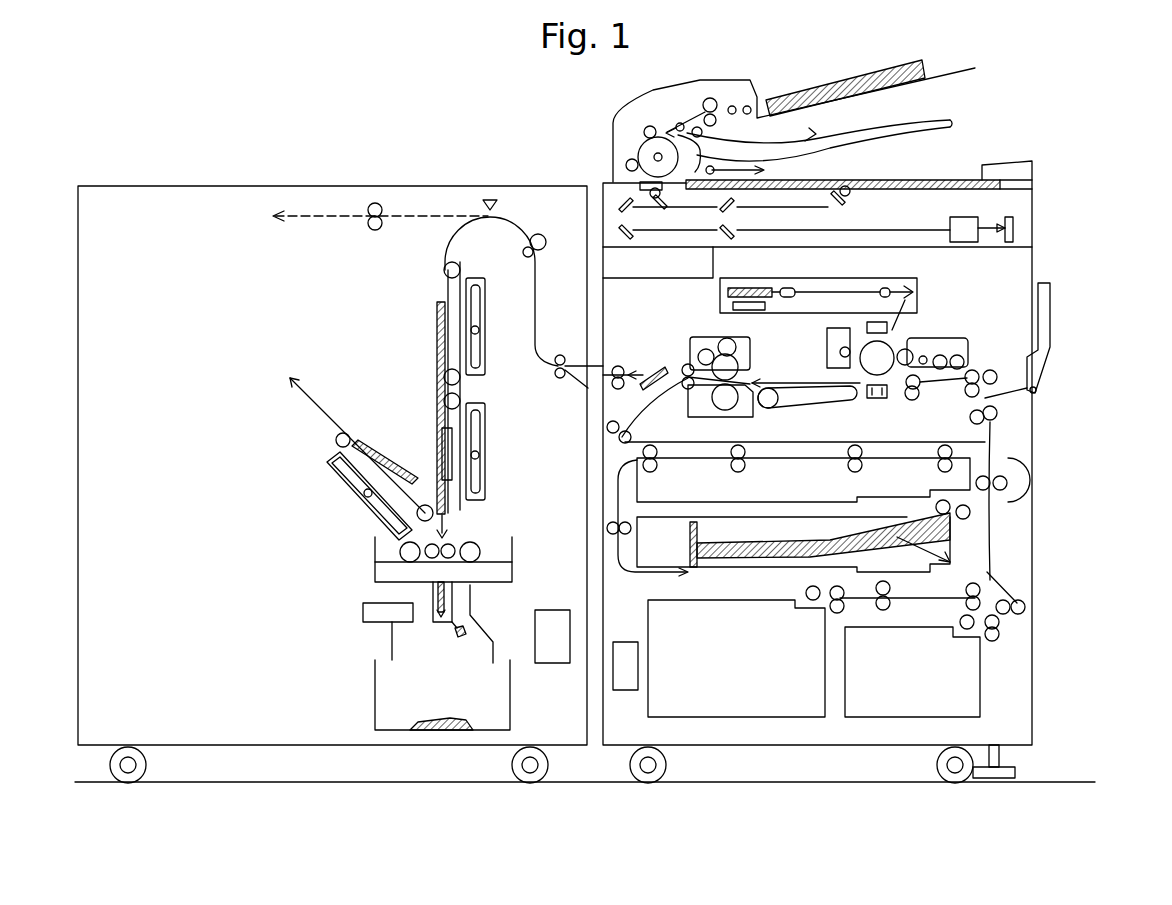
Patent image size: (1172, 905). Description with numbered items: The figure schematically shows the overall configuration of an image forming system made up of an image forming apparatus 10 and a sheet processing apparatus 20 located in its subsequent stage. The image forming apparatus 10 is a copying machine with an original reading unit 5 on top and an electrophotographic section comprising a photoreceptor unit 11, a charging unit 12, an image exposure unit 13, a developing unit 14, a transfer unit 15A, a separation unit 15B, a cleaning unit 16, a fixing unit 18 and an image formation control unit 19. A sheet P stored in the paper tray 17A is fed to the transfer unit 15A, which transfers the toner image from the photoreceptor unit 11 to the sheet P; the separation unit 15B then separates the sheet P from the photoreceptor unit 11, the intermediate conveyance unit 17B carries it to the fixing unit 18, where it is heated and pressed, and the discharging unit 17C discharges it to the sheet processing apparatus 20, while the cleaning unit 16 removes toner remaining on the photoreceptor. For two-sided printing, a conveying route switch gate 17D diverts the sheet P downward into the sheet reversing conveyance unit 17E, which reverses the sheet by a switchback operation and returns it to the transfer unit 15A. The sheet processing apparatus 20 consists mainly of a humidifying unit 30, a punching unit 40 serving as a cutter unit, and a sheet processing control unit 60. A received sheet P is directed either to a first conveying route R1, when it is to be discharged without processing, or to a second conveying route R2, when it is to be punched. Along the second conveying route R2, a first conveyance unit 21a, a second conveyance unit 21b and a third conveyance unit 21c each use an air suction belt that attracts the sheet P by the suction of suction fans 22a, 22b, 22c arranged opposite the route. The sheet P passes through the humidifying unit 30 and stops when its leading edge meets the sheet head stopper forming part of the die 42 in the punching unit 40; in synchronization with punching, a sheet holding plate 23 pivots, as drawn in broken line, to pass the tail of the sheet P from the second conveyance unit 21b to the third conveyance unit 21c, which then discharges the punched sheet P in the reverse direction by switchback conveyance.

The original reading unit 5 is at (1010, 160).
The image forming apparatus 10 is at (1036, 268).
The photoreceptor unit 11 is at (895, 336).
The charging unit 12 is at (866, 324).
The image exposure unit 13 is at (905, 272).
The developing unit 14 is at (952, 340).
The transfer unit 15A is at (882, 402).
The separation unit 15B is at (872, 405).
The cleaning unit 16 is at (828, 347).
The paper tray 17A is at (970, 555).
The intermediate conveyance unit 17B is at (800, 412).
The discharging unit 17C is at (617, 363).
The conveying route switch gate 17D is at (655, 365).
The sheet reversing conveyance unit 17E is at (970, 460).
The fixing unit 18 is at (712, 335).
The image formation control unit 19 is at (622, 645).
The sheet processing apparatus 20 is at (402, 146).
The first conveyance unit 21a is at (495, 260).
The second conveyance unit 21b is at (460, 400).
The third conveyance unit 21c is at (335, 438).
The suction fan 22a is at (480, 323).
The suction fan 22b is at (478, 447).
The suction fan 22c is at (345, 495).
The sheet holding plate 23 is at (453, 467).
The humidifying unit 30 is at (518, 550).
The punching unit 40 is at (350, 635).
The die 42 is at (446, 628).
The sheet processing control unit 60 is at (553, 665).
The sheet P is at (437, 337).
The first conveying route R1 is at (335, 222).
The second conveying route R2 is at (445, 252).